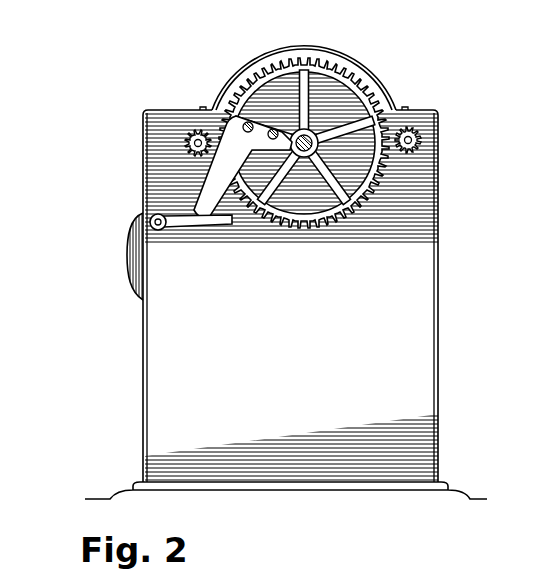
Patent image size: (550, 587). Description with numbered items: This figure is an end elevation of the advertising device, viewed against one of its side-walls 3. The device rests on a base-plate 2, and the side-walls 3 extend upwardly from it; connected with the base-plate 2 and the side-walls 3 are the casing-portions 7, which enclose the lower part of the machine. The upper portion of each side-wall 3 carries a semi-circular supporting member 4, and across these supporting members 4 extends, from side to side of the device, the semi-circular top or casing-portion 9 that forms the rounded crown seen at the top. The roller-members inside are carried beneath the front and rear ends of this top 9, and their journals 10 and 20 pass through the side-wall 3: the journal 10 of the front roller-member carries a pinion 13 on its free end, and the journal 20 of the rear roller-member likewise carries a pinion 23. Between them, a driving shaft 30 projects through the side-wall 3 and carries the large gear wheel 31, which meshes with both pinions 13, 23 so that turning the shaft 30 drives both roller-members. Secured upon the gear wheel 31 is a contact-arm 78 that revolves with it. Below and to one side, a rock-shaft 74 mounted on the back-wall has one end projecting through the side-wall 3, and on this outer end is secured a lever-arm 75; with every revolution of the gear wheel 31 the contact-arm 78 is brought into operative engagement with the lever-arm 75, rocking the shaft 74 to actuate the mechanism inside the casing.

The base-plate 2 is at (150, 486).
The side-walls 3 is at (516, 141).
The semi-circular supporting members 4 is at (338, 97).
The casing-portions 7 is at (143, 344).
The semi-circular top or casing-portion 9 is at (327, 56).
The journals 10 is at (422, 134).
The pinion 13 is at (426, 142).
The journals 20 is at (194, 134).
The pinion 23 is at (144, 150).
The driving shaft 30 is at (305, 152).
The gear wheel 31 is at (336, 228).
The rock-shaft 74 is at (152, 226).
The lever-arm 75 is at (220, 219).
The contact-arm 78 is at (210, 182).